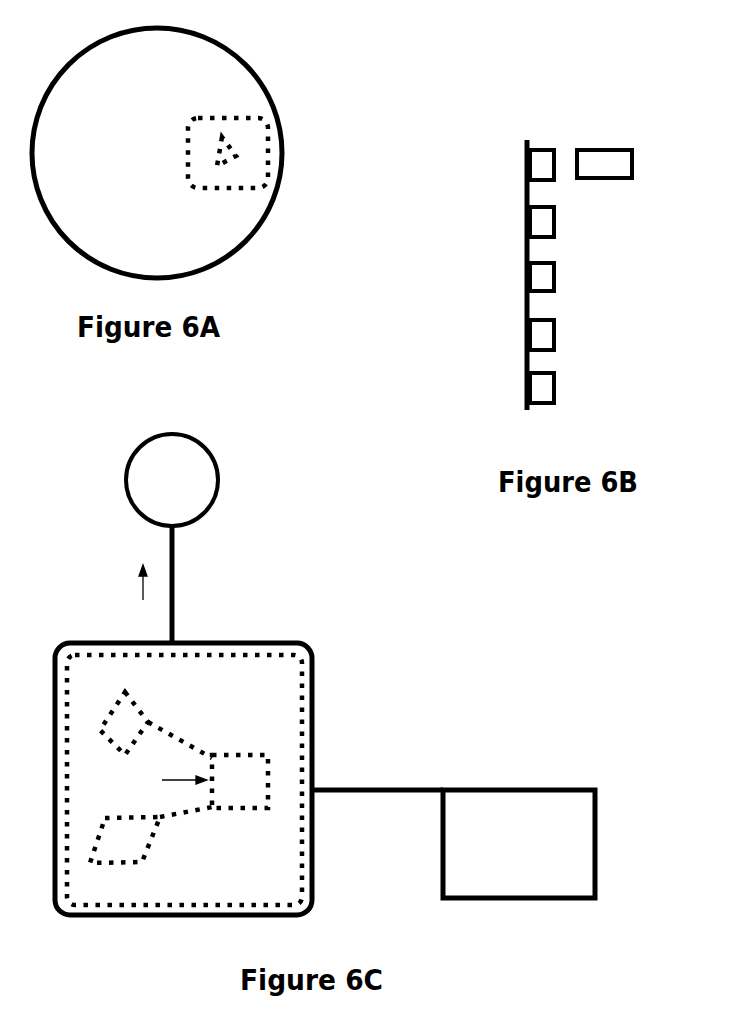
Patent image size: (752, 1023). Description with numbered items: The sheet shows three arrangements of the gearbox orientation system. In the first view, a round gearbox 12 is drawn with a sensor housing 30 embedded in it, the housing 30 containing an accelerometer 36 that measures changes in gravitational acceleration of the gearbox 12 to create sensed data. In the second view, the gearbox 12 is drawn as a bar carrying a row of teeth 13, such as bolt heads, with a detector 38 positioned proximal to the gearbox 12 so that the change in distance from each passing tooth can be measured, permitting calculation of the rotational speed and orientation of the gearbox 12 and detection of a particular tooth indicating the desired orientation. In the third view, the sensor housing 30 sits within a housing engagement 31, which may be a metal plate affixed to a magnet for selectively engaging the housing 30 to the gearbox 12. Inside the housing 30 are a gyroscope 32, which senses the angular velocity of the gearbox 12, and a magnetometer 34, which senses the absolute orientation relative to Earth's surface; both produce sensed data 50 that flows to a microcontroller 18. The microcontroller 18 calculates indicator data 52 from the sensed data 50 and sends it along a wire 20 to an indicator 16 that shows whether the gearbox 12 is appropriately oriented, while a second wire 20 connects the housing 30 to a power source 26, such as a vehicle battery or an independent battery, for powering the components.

In FIG. 6A, the gearbox 12 is at (157, 153).
In FIG. 6B, the gearbox 12 is at (533, 257).
In FIG. 6B, the chips 13 is at (589, 276).
In FIG. 6C, the indicator 16 is at (172, 480).
In FIG. 6C, the microcontroller 18 is at (240, 781).
In FIG. 6C, the wire 20 is at (173, 552).
In FIG. 6C, the power source 26 is at (519, 844).
In FIG. 6A, the sensor housing 30 is at (255, 128).
In FIG. 6C, the sensor housing 30 is at (245, 642).
In FIG. 6C, the housing engagement 31 is at (293, 650).
In FIG. 6C, the gyroscope 32 is at (156, 725).
In FIG. 6C, the magnetometer 34 is at (151, 835).
In FIG. 6A, the accelerometer 36 is at (228, 162).
In FIG. 6B, the detector 38 is at (604, 150).
In FIG. 6C, the sensed data 50 is at (168, 782).
In FIG. 6C, the indicator data 52 is at (145, 600).